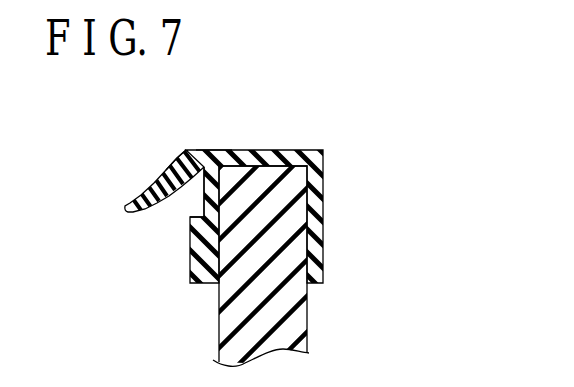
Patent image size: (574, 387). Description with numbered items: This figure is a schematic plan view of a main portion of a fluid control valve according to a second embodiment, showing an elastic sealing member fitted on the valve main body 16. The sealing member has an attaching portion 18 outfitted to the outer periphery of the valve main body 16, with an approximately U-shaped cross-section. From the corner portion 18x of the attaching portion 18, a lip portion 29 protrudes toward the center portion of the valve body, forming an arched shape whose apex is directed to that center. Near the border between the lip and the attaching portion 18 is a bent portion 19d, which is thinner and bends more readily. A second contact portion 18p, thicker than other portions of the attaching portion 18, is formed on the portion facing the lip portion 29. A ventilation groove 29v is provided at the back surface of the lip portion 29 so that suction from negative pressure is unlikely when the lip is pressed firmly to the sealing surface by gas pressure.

The valve main body 16 is at (300, 312).
The attaching portion 18 is at (323, 187).
The second contact portion 18p is at (190, 218).
The corner portion 18x is at (221, 150).
The bent portion 19d is at (203, 150).
The lip portion 29 is at (135, 198).
The ventilation groove 29v is at (183, 150).